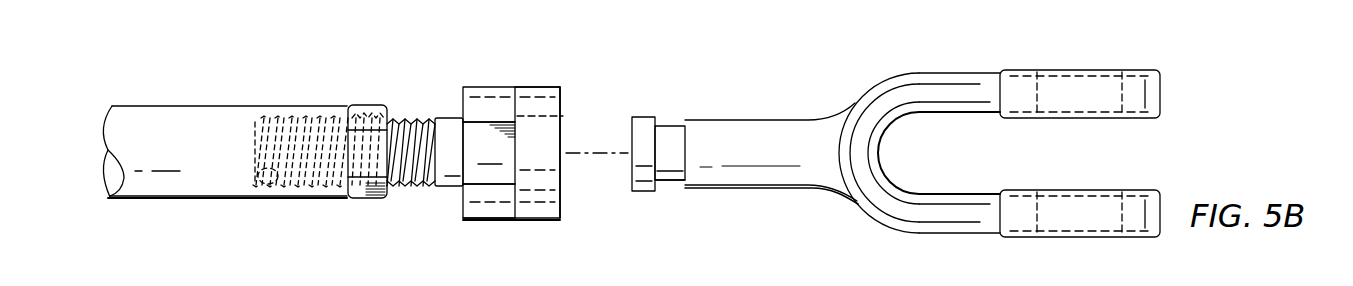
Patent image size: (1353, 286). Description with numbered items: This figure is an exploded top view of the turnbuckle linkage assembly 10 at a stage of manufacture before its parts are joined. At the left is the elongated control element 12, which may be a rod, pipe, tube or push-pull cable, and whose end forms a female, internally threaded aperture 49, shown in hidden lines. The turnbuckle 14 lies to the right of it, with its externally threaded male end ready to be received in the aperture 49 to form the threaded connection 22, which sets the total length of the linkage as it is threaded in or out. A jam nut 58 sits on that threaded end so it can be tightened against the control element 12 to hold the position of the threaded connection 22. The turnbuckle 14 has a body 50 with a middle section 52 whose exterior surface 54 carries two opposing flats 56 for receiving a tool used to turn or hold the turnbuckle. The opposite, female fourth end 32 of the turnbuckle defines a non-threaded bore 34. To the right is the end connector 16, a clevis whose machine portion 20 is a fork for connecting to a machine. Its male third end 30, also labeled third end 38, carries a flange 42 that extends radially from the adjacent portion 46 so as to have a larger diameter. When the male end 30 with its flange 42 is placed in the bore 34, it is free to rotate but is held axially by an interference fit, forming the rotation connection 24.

The turnbuckle linkage assembly 10 is at (838, 62).
The control element 12 is at (155, 112).
The turnbuckle 14 is at (484, 82).
The end connector 16 is at (773, 130).
The machine portion 20 is at (960, 92).
The threaded connection 22 is at (370, 78).
The rotation connection 24 is at (562, 228).
The male third end 30 is at (670, 128).
The female fourth end 32 is at (540, 87).
The bore 34 is at (565, 122).
The third end 38 is at (411, 202).
The flange 42 is at (642, 117).
The adjacent portion 46 is at (670, 184).
The internally threaded aperture 49 is at (262, 172).
The body 50 is at (478, 212).
The middle section 52 is at (500, 212).
The exterior surface 54 is at (470, 135).
The flat 56 is at (489, 153).
The jam nut 58 is at (358, 200).